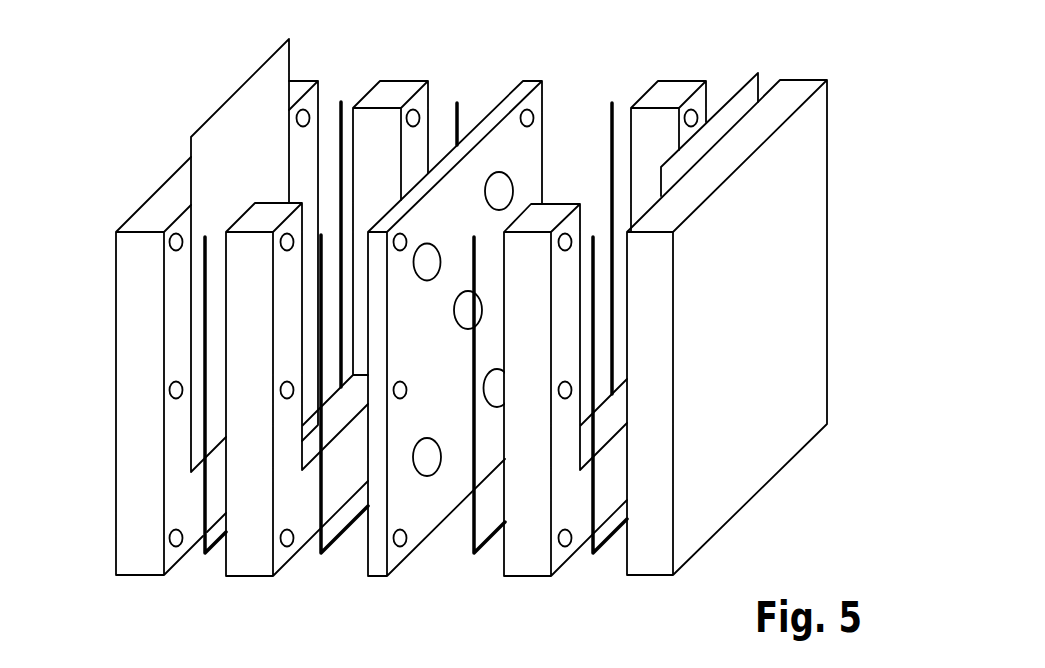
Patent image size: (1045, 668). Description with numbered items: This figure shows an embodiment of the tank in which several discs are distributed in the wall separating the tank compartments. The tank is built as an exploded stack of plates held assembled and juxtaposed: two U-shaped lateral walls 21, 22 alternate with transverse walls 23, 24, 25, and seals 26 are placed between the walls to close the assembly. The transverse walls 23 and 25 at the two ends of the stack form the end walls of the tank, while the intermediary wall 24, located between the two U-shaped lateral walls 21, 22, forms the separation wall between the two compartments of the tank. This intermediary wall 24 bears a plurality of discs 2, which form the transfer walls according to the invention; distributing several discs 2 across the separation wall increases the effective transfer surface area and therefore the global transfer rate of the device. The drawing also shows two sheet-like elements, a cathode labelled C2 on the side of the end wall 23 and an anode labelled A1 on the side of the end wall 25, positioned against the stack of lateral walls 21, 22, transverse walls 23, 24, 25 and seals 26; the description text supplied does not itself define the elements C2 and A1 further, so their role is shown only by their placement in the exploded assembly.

The discs 2 is at (498, 164).
The U-shaped lateral wall 21 is at (253, 548).
The U-shaped lateral wall 22 is at (528, 560).
The transverse wall 23 is at (133, 285).
The intermediary wall 24 is at (530, 147).
The transverse wall 25 is at (788, 268).
The seals 26 is at (484, 548).
The cathode C2 is at (240, 84).
The anode A1 is at (741, 80).